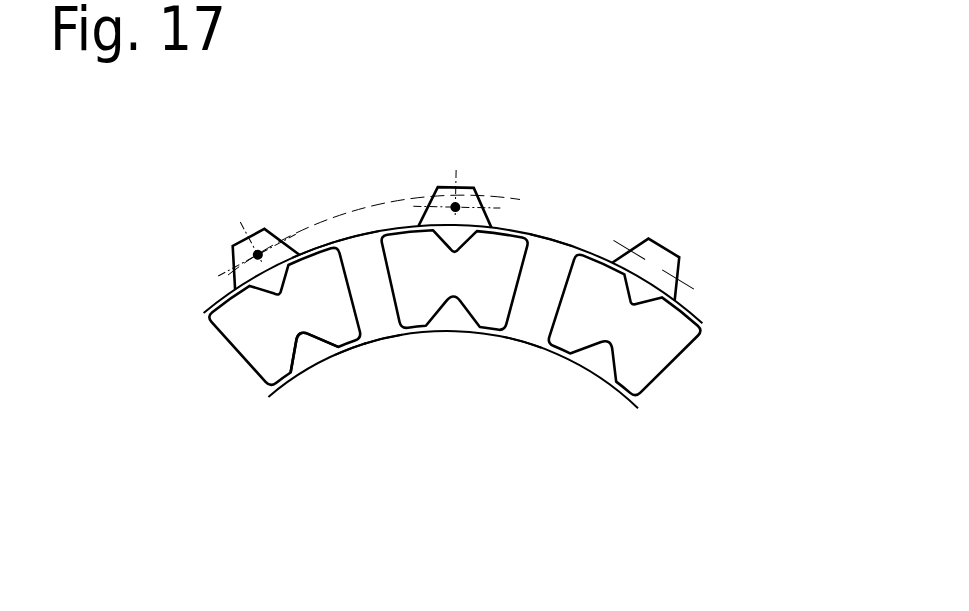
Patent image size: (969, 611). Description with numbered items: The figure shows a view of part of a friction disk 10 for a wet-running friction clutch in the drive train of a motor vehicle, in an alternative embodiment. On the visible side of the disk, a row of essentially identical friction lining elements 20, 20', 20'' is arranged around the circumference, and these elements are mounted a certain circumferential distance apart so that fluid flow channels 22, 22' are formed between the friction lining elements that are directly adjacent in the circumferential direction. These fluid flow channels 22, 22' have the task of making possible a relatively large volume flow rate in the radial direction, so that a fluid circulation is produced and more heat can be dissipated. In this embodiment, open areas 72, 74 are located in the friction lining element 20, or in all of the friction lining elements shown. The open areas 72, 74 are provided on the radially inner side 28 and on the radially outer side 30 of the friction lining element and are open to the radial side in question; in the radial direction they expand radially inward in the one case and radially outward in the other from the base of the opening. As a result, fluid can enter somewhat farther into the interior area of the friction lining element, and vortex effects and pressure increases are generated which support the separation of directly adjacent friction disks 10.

The friction disk 10 is at (745, 163).
The friction lining element 20 is at (292, 264).
The friction lining element 20' is at (484, 230).
The friction lining element 20'' is at (680, 328).
The fluid flow channel 22 is at (392, 220).
The fluid flow channel 22' is at (582, 261).
The radially inner side 28 is at (353, 347).
The radially outer side 30 is at (300, 257).
The open area 72 is at (311, 353).
The open area 74 is at (272, 285).